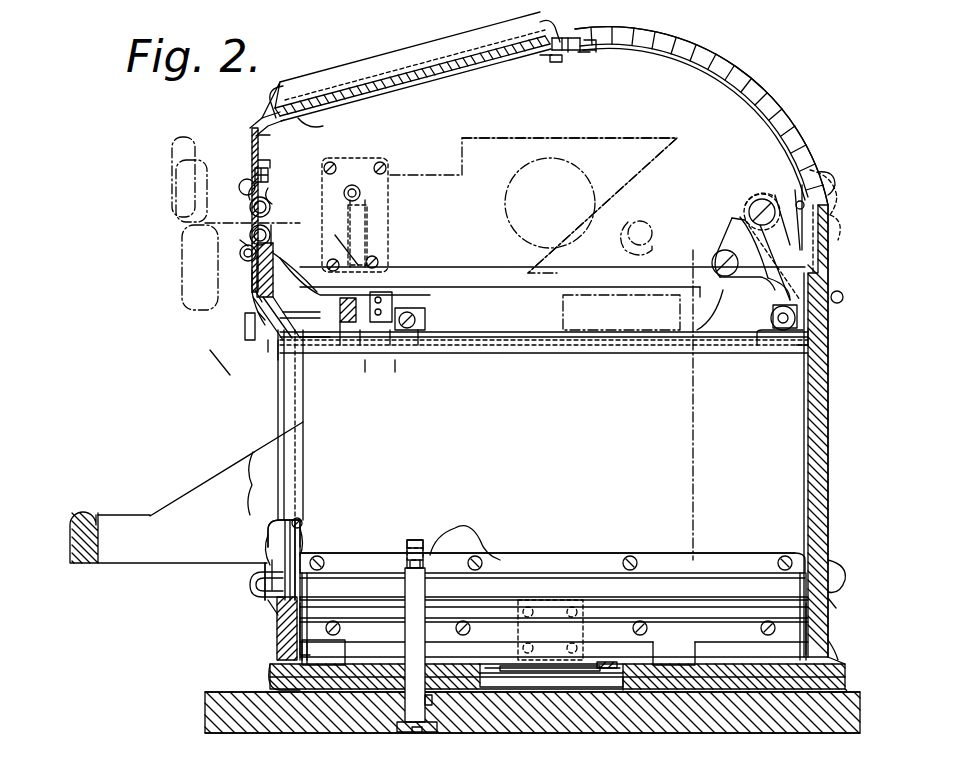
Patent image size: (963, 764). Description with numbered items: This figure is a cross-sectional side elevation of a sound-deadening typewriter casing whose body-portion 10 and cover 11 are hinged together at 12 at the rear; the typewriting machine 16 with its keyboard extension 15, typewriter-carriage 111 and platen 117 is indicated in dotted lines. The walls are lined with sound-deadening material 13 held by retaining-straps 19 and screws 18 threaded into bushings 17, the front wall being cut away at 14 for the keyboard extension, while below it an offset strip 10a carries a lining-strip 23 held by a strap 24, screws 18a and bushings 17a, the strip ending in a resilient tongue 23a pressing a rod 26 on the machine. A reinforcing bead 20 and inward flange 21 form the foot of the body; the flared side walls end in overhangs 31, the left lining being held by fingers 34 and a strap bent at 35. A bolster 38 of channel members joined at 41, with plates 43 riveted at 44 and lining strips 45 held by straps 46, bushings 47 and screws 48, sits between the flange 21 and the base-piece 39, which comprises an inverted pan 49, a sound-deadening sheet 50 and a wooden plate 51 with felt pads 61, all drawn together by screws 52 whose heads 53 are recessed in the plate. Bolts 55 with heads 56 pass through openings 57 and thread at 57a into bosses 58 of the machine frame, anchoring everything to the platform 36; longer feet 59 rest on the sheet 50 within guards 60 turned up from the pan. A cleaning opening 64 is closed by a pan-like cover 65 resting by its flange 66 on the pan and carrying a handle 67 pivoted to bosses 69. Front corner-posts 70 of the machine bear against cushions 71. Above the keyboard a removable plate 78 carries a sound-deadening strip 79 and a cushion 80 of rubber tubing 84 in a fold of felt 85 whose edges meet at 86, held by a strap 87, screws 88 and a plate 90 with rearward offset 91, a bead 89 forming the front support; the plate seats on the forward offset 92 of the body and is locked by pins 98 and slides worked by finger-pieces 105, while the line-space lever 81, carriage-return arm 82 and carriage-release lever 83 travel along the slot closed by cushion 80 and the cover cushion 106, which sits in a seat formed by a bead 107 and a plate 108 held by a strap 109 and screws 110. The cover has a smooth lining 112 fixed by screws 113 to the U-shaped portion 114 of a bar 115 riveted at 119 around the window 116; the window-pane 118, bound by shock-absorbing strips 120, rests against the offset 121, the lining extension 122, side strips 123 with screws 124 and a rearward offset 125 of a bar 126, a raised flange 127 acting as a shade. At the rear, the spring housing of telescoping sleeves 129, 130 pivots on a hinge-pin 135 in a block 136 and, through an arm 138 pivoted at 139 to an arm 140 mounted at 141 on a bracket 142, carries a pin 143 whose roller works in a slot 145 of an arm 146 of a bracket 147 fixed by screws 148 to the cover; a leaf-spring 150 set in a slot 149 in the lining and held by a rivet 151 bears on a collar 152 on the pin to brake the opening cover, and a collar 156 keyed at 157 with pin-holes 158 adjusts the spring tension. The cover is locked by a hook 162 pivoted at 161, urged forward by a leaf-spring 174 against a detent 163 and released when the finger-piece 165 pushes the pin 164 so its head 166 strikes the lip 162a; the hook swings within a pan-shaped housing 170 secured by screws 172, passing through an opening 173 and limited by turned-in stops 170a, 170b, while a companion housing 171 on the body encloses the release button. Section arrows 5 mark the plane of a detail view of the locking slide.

The section line 5 is at (356, 257).
The body-portion 10 is at (842, 405).
The offset strip 10a is at (265, 545).
The cover 11 is at (787, 82).
The hinge 12 is at (830, 305).
The sound-deadening material 13 is at (300, 582).
The cut-away opening 14 is at (266, 414).
The keyboard extension 15 is at (215, 480).
The typewriting machine 16 is at (690, 380).
The bushings 17 is at (826, 560).
The bushings 17a is at (262, 575).
The screws 18 is at (790, 563).
The screws 18a is at (272, 565).
The retaining-straps 19 is at (805, 552).
The reinforcing bead 20 is at (845, 578).
The peripheral flange 21 is at (830, 600).
The lining-strip 23 is at (276, 522).
The resilient tongue 23a is at (305, 530).
The strap 24 is at (283, 548).
The rod 26 is at (297, 520).
The overhangs 31 is at (590, 360).
The fingers 34 is at (803, 350).
The bend 35 is at (714, 355).
The platform 36 is at (210, 697).
The bolster 38 is at (830, 640).
The base-piece 39 is at (256, 669).
The joint 41 is at (555, 602).
The plates 43 is at (518, 632).
The rivets 44 is at (568, 618).
The lining-material strips 45 is at (277, 650).
The straps 46 is at (805, 612).
The bushings 47 is at (277, 630).
The screws 48 is at (805, 640).
The pan 49 is at (840, 672).
The sound-deadening sheet 50 is at (640, 667).
The plate 51 is at (630, 690).
The screws 52 is at (830, 648).
The screw heads 53 is at (840, 688).
The bolts 55 is at (405, 705).
The bolt heads 56 is at (428, 732).
The openings 57 is at (432, 705).
The threaded engagement 57a is at (407, 545).
The bosses 58 is at (440, 548).
The feet 59 is at (700, 628).
The guards 60 is at (690, 645).
The pads 61 is at (352, 700).
The opening 64 is at (620, 700).
The pan-like cover 65 is at (502, 670).
The peripheral flange 66 is at (480, 665).
The handle 67 is at (597, 665).
The bosses 69 is at (552, 668).
The front corner-posts 70 is at (532, 748).
The cushions 71 is at (300, 440).
The plate 78 is at (244, 284).
The strip 79 is at (258, 312).
The cushion 80 is at (233, 247).
The line-space lever 81 is at (176, 137).
The carriage-return arm 82 is at (176, 160).
The carriage-release lever 83 is at (182, 272).
The rubber tubing 84 is at (252, 213).
The felt strip 85 is at (250, 236).
The felt edges 86 is at (244, 257).
The strap 87 is at (276, 252).
The screws 88 is at (285, 262).
The bead 89 is at (240, 255).
The plate 90 is at (255, 296).
The offset 91 is at (273, 240).
The offset edge 92 is at (255, 313).
The pin 98 is at (247, 335).
The finger-piece 105 is at (325, 345).
The cushion 106 is at (242, 190).
The bead 107 is at (252, 185).
The plate 108 is at (274, 192).
The strap 109 is at (272, 165).
The screws 110 is at (240, 165).
The typewriter-carriage 111 is at (630, 145).
The lining 112 is at (668, 60).
The screws 113 is at (583, 55).
The U-shaped portion 114 is at (595, 50).
The bar 115 is at (568, 40).
The window 116 is at (455, 62).
The platen 117 is at (575, 172).
The window-pane 118 is at (418, 85).
The rivets 119 is at (557, 38).
The shock-absorbing strip 120 is at (300, 122).
The flange 121 is at (262, 110).
The extension 122 is at (556, 62).
The metal strips 123 is at (478, 85).
The screws 124 is at (440, 90).
The rearward offset 125 is at (270, 140).
The bar 126 is at (252, 143).
The flange 127 is at (540, 28).
The housing-member 129 is at (686, 292).
The housing-member 130 is at (650, 292).
The hinge-pin 135 is at (420, 320).
The block 136 is at (430, 312).
The arm 138 is at (745, 305).
The pivot 139 is at (718, 252).
The arm 140 is at (730, 238).
The pivot 141 is at (783, 335).
The bracket 142 is at (760, 355).
The pin 143 is at (745, 215).
The slot 145 is at (738, 262).
The arm 146 is at (775, 195).
The bracket 147 is at (828, 178).
The screws 148 is at (832, 232).
The slot 149 is at (795, 190).
The leaf-spring 150 is at (797, 200).
The rivet 151 is at (802, 185).
The collar 152 is at (745, 198).
The collar 156 is at (405, 300).
The key 157 is at (418, 345).
The pin-holes 158 is at (392, 345).
The pivot 161 is at (358, 198).
The hook 162 is at (372, 245).
The lip 162a is at (395, 375).
The detent 163 is at (350, 312).
The spring-pressed pin 164 is at (278, 350).
The finger-piece 165 is at (268, 345).
The head 166 is at (346, 345).
The housing section 170 is at (368, 165).
The stop 170a is at (367, 375).
The stop 170b is at (440, 268).
The housing section 171 is at (365, 345).
The screws 172 is at (380, 262).
The opening 173 is at (392, 300).
The leaf-spring 174 is at (375, 235).